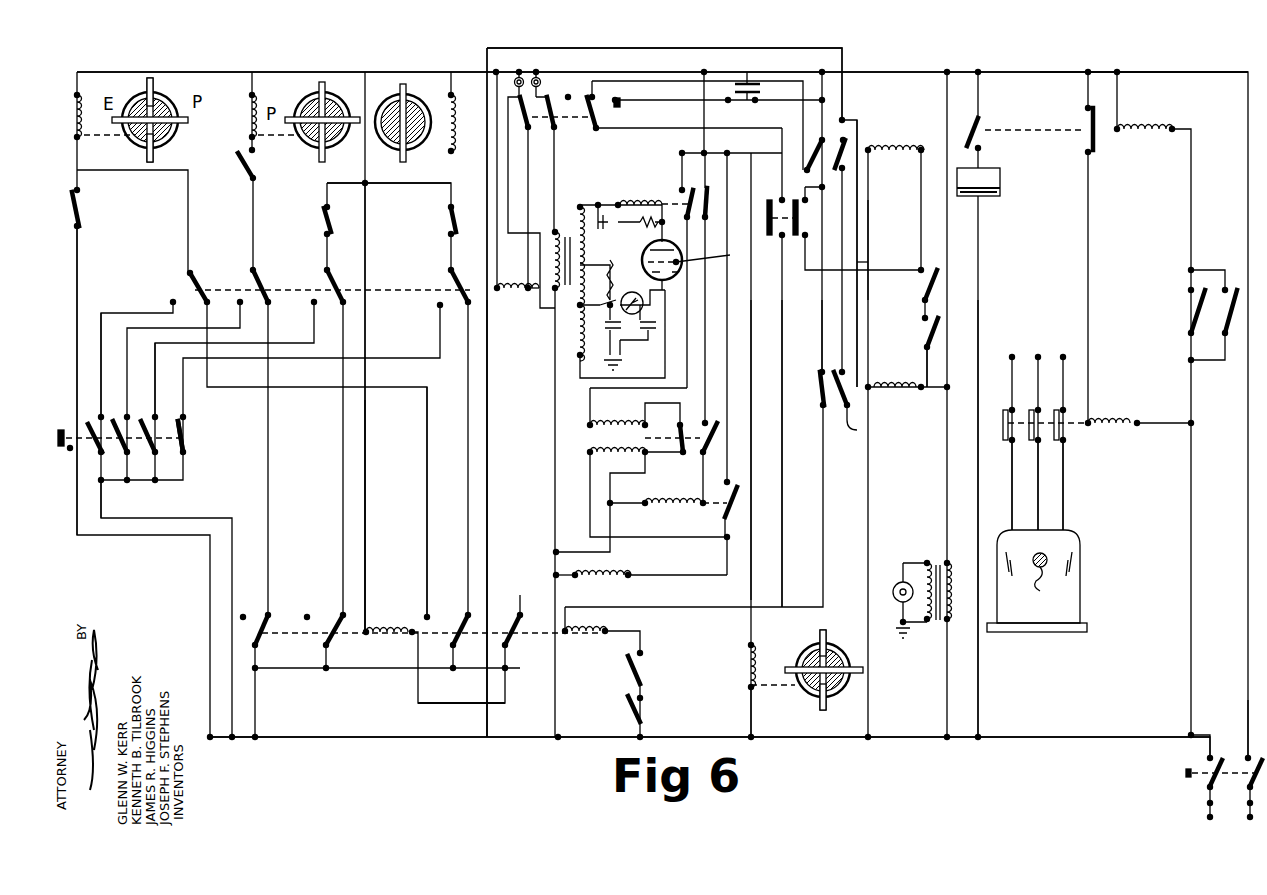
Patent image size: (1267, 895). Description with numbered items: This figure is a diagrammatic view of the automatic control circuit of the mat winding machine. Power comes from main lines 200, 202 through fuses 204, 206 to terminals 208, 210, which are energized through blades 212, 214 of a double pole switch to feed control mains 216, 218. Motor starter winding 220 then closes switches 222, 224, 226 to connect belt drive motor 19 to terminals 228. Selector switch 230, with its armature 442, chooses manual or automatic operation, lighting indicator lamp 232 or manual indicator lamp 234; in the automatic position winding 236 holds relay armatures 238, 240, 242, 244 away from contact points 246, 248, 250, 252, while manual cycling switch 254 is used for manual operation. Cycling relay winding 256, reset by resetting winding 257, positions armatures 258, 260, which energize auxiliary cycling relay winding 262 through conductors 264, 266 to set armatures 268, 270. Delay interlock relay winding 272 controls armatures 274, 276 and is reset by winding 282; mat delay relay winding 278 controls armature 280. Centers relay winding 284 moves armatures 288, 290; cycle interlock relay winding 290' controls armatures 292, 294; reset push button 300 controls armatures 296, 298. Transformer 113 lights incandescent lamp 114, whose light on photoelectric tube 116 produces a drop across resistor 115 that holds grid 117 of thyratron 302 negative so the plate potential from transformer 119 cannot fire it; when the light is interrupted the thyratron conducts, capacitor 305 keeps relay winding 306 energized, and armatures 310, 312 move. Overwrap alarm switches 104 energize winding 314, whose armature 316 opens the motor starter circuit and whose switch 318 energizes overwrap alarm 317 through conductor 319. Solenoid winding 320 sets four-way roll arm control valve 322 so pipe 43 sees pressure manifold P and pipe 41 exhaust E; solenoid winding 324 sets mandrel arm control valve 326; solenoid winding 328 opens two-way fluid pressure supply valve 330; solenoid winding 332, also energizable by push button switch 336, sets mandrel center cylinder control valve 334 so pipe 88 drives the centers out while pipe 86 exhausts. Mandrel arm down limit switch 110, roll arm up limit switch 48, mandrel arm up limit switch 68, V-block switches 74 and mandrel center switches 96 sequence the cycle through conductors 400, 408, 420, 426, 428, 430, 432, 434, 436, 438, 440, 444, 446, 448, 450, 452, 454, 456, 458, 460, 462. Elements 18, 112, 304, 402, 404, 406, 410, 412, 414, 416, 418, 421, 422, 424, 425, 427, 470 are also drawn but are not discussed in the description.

The lamp filament 18 is at (1036, 578).
The belt drive motor 19 is at (1078, 594).
The pipe 41 is at (158, 84).
The pipe 43 is at (162, 158).
The roll arm up limit switch 48 is at (240, 186).
The mandrel arm up limit switch 68 is at (338, 238).
The V-block switches 74 is at (920, 290).
The pipe 86 is at (826, 708).
The pipe 88 is at (824, 634).
The mandrel center switches 96 is at (624, 674).
The mandrel overwrap alarm switches 104 is at (1190, 320).
The mandrel arm down limit switch 110 is at (80, 208).
The switch 112 is at (469, 237).
The transformer 113 is at (934, 626).
The incandescent lamp 114 is at (890, 582).
The resistor 115 is at (620, 358).
The photoelectric tube 116 is at (624, 280).
The grid 117 is at (644, 252).
The transformer 119 is at (566, 208).
The main line 200 is at (1202, 816).
The main line 202 is at (1250, 816).
The fuse 204 is at (1250, 802).
The fuse 206 is at (1202, 802).
The terminal 208 is at (1206, 758).
The terminal 210 is at (1245, 744).
The blade 212 is at (1202, 780).
The blade 214 is at (1245, 748).
The control main 216 is at (1045, 70).
The control main 218 is at (482, 740).
The motor starter winding 220 is at (1127, 424).
The motor starter switch 222 is at (1064, 442).
The motor starter switch 224 is at (1038, 442).
The motor starter switch 226 is at (1004, 444).
The terminals 228 is at (1013, 356).
The selector switch 230 is at (623, 104).
The indicator lamp 232 is at (522, 60).
The manual indicator lamp 234 is at (540, 64).
The winding 236 is at (523, 306).
The relay armature 238 is at (202, 270).
The relay armature 240 is at (250, 276).
The relay armature 242 is at (337, 282).
The relay armature 244 is at (480, 268).
The contact point 246 is at (172, 296).
The contact point 248 is at (234, 292).
The contact point 250 is at (278, 308).
The contact point 252 is at (434, 308).
The manual cycling switch 254 is at (72, 458).
The cycling relay winding 256 is at (583, 638).
The resetting winding 257 is at (604, 576).
The armature 258 is at (460, 650).
The armature 260 is at (514, 652).
The auxiliary cycling relay winding 262 is at (386, 650).
The conductor 264 is at (520, 688).
The conductor 266 is at (374, 532).
The armature 268 is at (256, 648).
The armature 270 is at (328, 650).
The delay interlock relay winding 272 is at (610, 425).
The armature 274 is at (702, 460).
The armature 276 is at (678, 448).
The mat delay relay winding 278 is at (670, 504).
The armature 280 is at (742, 504).
The winding 282 is at (586, 448).
The centers relay winding 284 is at (903, 146).
The armature 288 is at (848, 154).
The armature 290 is at (807, 244).
The cycle interlock relay winding 290' is at (907, 405).
The armature 292 is at (822, 372).
The armature 294 is at (836, 426).
The armature 296 is at (778, 244).
The armature 298 is at (798, 260).
The reset push button 300 is at (732, 208).
The thyratron 302 is at (726, 260).
The conductor 304 is at (554, 360).
The capacitor 305 is at (622, 203).
The relay winding 306 is at (630, 194).
The armature 310 is at (743, 170).
The armature 312 is at (692, 188).
The overwrap alarm relay winding 314 is at (1156, 136).
The armature 316 is at (1082, 155).
The overwrap alarm 317 is at (992, 204).
The armature 318 is at (983, 120).
The conductor 319 is at (981, 678).
The solenoid winding 320 is at (90, 90).
The roll arm control valve 322 is at (126, 142).
The solenoid winding 324 is at (238, 90).
The mandrel arm control valve 326 is at (312, 154).
The solenoid winding 328 is at (454, 90).
The fluid pressure supply valve 330 is at (375, 86).
The solenoid winding 332 is at (736, 670).
The mandrel center cylinder control valve 334 is at (804, 692).
The push button switch 336 is at (747, 80).
The conductor 400 is at (176, 176).
The conductor 402 is at (101, 312).
The conductor 404 is at (100, 416).
The conductor 406 is at (230, 508).
The conductor 408 is at (260, 236).
The conductor 410 is at (144, 354).
The switch bank 412 is at (124, 448).
The conductor 414 is at (421, 184).
The conductor 416 is at (253, 387).
The switch 418 is at (165, 438).
The conductor 420 is at (922, 494).
The conductor 421 is at (751, 366).
The conductor 422 is at (682, 150).
The conductor 424 is at (782, 430).
The conductor 425 is at (692, 576).
The conductor 426 is at (421, 672).
The conductor 427 is at (656, 540).
The conductor 428 is at (258, 722).
The conductor 430 is at (82, 250).
The conductor 432 is at (425, 418).
The conductor 434 is at (328, 520).
The conductor 436 is at (331, 407).
The conductor 438 is at (818, 114).
The conductor 440 is at (647, 80).
The armature 442 is at (587, 124).
The conductor 444 is at (710, 146).
The conductor 446 is at (738, 714).
The conductor 448 is at (980, 262).
The conductor 450 is at (902, 224).
The conductor 452 is at (866, 360).
The conductor 454 is at (864, 270).
The conductor 456 is at (856, 224).
The conductor 458 is at (818, 310).
The conductor 460 is at (816, 542).
The conductor 462 is at (650, 52).
The conductor 470 is at (462, 462).